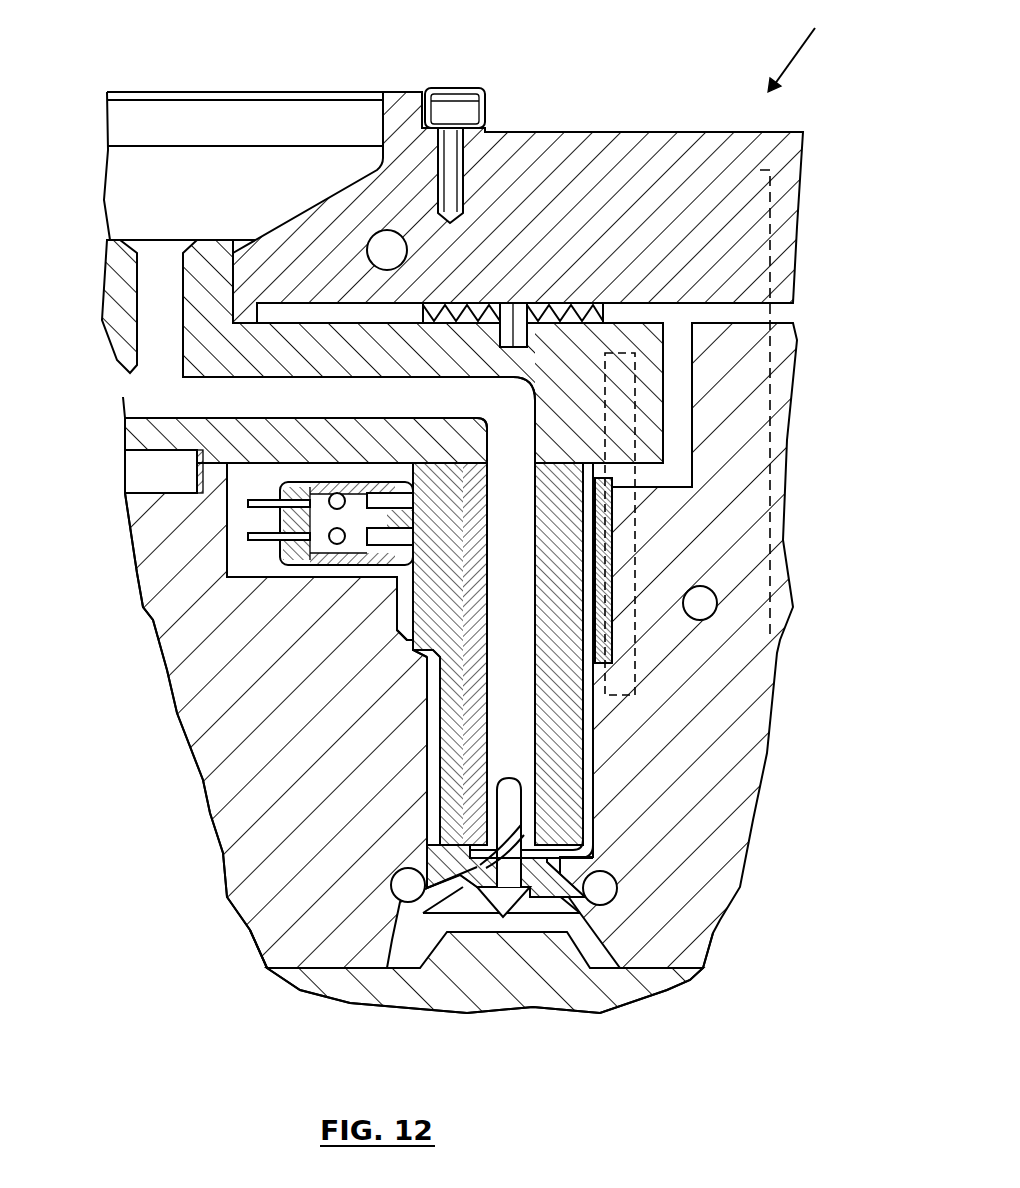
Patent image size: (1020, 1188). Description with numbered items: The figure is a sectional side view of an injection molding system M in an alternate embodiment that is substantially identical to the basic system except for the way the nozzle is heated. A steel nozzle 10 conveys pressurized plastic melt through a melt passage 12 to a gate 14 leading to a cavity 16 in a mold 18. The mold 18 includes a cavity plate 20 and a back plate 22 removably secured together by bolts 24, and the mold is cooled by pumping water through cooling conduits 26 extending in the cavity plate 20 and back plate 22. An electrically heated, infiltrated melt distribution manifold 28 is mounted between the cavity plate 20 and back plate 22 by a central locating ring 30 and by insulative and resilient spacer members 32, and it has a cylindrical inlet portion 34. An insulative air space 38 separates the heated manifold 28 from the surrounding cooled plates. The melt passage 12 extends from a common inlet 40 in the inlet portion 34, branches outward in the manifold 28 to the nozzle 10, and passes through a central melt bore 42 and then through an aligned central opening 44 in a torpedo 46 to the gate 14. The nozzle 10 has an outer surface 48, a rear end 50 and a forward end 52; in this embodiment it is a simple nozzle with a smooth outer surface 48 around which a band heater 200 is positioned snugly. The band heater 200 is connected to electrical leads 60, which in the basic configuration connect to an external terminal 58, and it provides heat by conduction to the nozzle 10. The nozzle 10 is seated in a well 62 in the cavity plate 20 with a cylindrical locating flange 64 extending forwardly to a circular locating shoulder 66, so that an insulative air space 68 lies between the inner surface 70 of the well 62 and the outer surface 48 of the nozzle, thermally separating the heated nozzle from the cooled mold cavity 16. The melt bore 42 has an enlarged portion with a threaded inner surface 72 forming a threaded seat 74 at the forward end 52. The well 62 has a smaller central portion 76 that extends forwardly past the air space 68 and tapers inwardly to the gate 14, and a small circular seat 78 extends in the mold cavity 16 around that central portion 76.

The injection molding system M is at (818, 46).
The nozzle 10 is at (455, 713).
The melt passage 12 is at (140, 393).
The gate 14 is at (503, 888).
The cavity 16 is at (413, 955).
The mold 18 is at (207, 785).
The cavity plate 20 is at (260, 915).
The back plate 22 is at (618, 153).
The bolts 24 is at (785, 345).
The cooling conduits 26 is at (388, 245).
The melt distribution manifold 28 is at (572, 383).
The central locating ring 30 is at (190, 487).
The spacer members 32 is at (665, 316).
The cylindrical inlet portion 34 is at (118, 284).
The insulative air space 38 is at (680, 405).
The common inlet 40 is at (165, 245).
The central melt bore 42 is at (517, 738).
The central opening 44 is at (590, 802).
The torpedo 46 is at (545, 827).
The outer surface 48 is at (593, 718).
The rear end 50 is at (487, 440).
The forward end 52 is at (343, 963).
The external terminal 58 is at (227, 580).
The electrical leads 60 is at (248, 521).
The well 62 is at (427, 680).
The cylindrical locating flange 64 is at (403, 618).
The circular locating shoulder 66 is at (427, 650).
The insulative air space 68 is at (455, 860).
The inner surface 70 is at (427, 750).
The threaded inner surface 72 is at (445, 805).
The threaded seat 74 is at (460, 917).
The central portion 76 is at (540, 900).
The small circular seat 78 is at (593, 857).
The band heater 200 is at (585, 670).